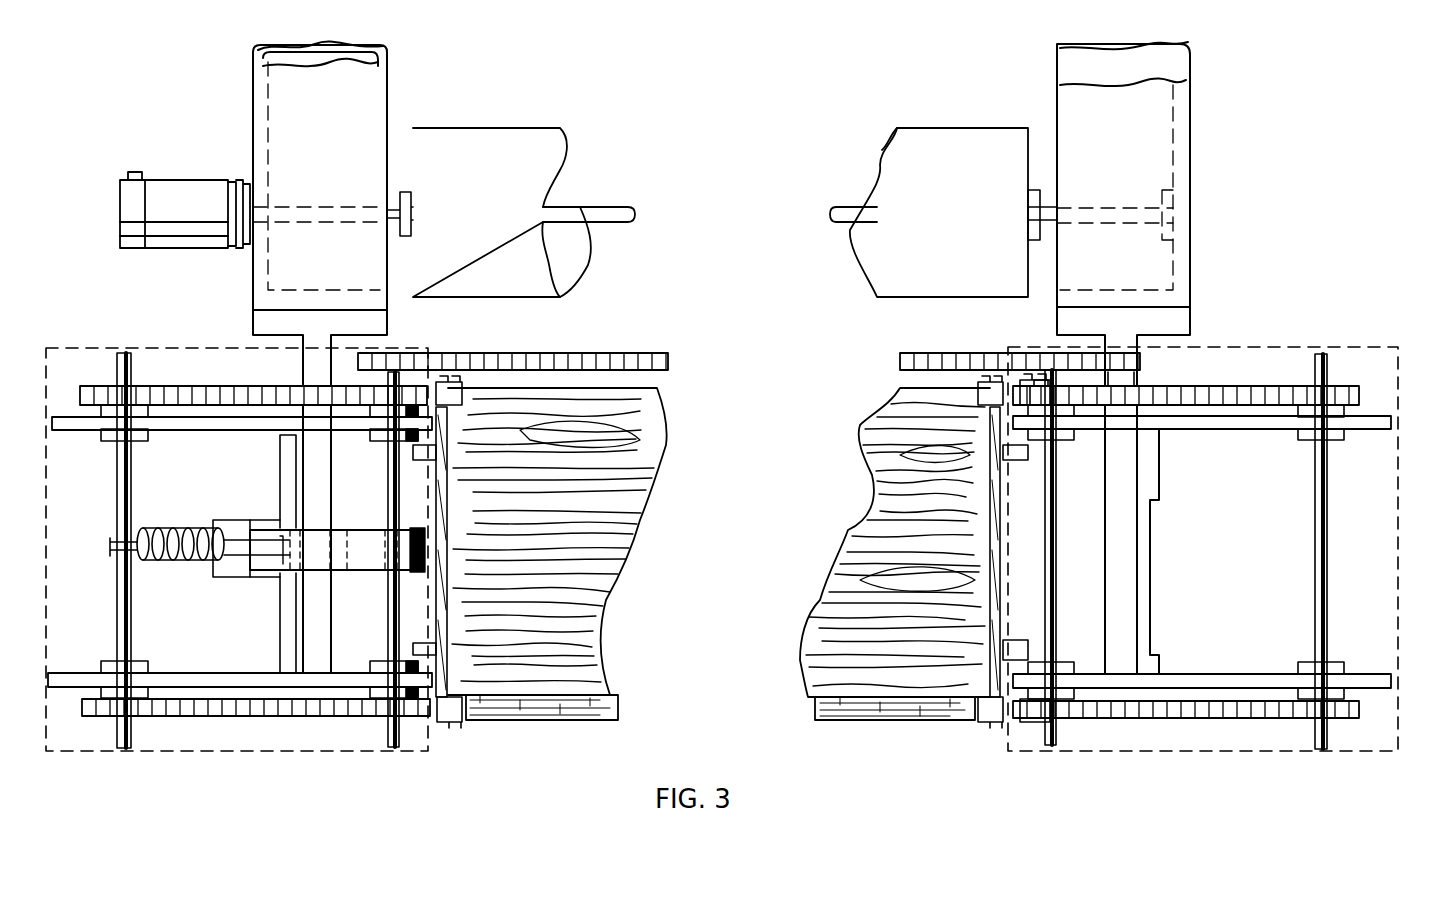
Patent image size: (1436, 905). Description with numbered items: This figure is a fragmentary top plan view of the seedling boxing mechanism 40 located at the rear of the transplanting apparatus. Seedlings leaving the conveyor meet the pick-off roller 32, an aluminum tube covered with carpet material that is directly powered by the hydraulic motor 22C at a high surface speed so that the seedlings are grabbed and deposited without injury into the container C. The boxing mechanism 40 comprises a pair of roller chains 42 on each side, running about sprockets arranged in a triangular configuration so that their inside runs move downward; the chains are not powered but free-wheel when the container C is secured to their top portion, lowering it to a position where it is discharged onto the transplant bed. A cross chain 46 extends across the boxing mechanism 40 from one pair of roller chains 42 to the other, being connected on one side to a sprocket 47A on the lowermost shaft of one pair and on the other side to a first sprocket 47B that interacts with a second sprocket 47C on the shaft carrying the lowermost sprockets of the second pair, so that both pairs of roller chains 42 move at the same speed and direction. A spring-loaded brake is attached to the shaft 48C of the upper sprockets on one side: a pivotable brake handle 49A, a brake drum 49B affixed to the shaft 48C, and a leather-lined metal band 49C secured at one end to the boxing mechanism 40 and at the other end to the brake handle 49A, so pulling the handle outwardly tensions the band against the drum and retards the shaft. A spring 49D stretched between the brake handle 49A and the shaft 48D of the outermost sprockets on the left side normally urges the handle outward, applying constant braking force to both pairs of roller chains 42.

The boxing mechanism 40 is at (158, 62).
The hydraulic motor 22C is at (185, 178).
The pick-off roller 32 is at (474, 226).
The roller chains 42 is at (212, 348).
The cross chain 46 is at (945, 352).
The sprocket 47A is at (440, 353).
The first sprocket 47B is at (1122, 352).
The second sprocket 47C is at (1040, 352).
The shaft 48C is at (387, 452).
The shaft 48D is at (132, 470).
The brake handle 49A is at (258, 520).
The brake drum 49B is at (405, 572).
The metal band 49C is at (380, 528).
The spring 49D is at (140, 528).
The container C is at (920, 592).